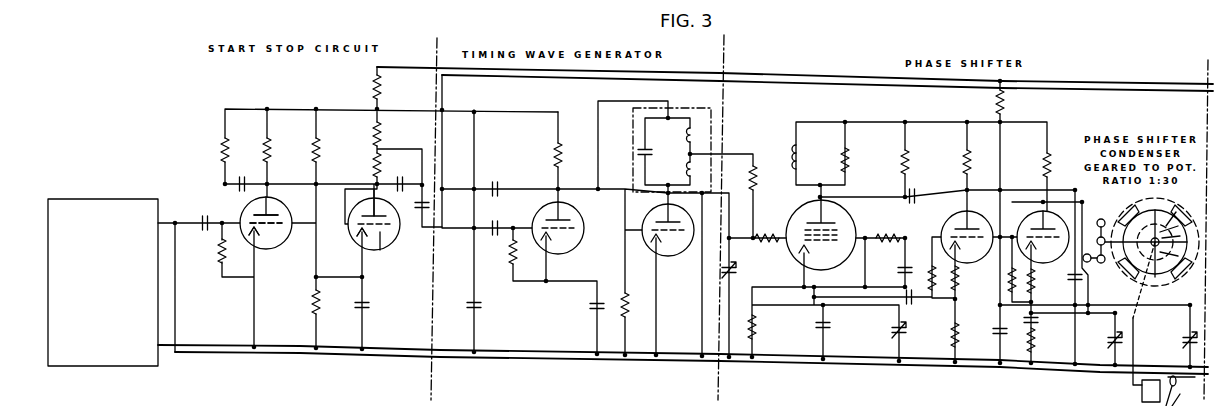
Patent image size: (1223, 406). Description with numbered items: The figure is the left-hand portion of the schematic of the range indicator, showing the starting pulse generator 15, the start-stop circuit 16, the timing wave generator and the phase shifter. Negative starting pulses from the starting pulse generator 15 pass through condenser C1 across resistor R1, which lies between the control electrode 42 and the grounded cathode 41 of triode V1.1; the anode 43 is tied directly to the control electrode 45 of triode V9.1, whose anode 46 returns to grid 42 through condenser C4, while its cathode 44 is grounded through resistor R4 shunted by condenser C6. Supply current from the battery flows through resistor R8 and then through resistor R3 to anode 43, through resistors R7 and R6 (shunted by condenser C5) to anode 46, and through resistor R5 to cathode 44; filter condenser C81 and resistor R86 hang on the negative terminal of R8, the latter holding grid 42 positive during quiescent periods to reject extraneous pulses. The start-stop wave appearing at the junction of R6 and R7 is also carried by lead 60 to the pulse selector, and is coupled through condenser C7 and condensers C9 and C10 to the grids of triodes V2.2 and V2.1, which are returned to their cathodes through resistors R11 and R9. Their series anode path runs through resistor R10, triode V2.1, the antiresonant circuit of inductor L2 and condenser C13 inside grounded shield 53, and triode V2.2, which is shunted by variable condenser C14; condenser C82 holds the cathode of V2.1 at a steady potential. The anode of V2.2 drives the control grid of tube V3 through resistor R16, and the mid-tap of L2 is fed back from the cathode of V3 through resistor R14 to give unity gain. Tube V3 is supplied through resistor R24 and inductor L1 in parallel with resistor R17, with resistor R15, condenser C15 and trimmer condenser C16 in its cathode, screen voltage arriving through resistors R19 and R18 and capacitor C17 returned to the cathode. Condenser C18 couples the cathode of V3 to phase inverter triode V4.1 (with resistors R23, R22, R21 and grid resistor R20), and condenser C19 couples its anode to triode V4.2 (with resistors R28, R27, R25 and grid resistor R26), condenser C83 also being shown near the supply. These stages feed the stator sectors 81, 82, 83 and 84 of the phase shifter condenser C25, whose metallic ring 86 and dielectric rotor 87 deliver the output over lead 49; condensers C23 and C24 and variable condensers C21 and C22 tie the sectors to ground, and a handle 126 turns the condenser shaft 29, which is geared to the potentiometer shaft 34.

The starting pulse generator 15 is at (118, 199).
The start-stop circuit 16 is at (358, 204).
The condenser C1 is at (203, 217).
The resistor R1 is at (216, 251).
The resistor R86 is at (222, 140).
The resistor R3 is at (265, 140).
The condenser C4 is at (243, 181).
The electronic triode V1.1 is at (275, 205).
The anode 43 is at (285, 214).
The control electrode 42 is at (288, 234).
The cathode 41 is at (262, 244).
The resistor R5 is at (322, 148).
The resistor R7 is at (381, 140).
The resistor R6 is at (381, 168).
The resistor R8 is at (383, 87).
The condenser C5 is at (402, 183).
The anode 46 is at (366, 206).
The electronic triode V9.1 is at (357, 244).
The cathode 44 is at (366, 248).
The control electrode 45 is at (389, 250).
The condenser C7 is at (419, 218).
The resistor R4 is at (319, 300).
The condenser C6 is at (364, 300).
The resistor R10 is at (555, 150).
The condenser C9 is at (498, 187).
The condenser C10 is at (500, 226).
The triode V2.1 is at (550, 208).
The resistor R9 is at (509, 253).
The filter condenser C81 is at (477, 307).
The condenser C82 is at (590, 307).
The resistor R11 is at (631, 306).
The triode V2.2 is at (663, 210).
The grounded shield 53 is at (709, 110).
The condenser C13 is at (646, 156).
The inductor L2 is at (684, 162).
The resistor R14 is at (754, 165).
The inductor L1 is at (820, 147).
The resistor R17 is at (842, 166).
The electronic device V3 is at (846, 213).
The resistor R16 is at (777, 224).
The variable condenser C14 is at (740, 273).
The resistor R15 is at (754, 328).
The condenser C15 is at (815, 336).
The resistor R18 is at (892, 225).
The screen grid capacitor C17 is at (899, 268).
The condenser C18 is at (904, 304).
The variable condenser C16 is at (894, 336).
The resistor R19 is at (900, 158).
The condenser C19 is at (915, 195).
The resistor R23 is at (961, 160).
The phase inverter triode V4.1 is at (956, 218).
The resistor R20 is at (934, 296).
The resistor R21 is at (950, 341).
The resistor R26 is at (998, 276).
The resistor R22 is at (1007, 286).
The resistor R24 is at (1006, 101).
The resistor R28 is at (1043, 158).
The phase inverter triode V4.2 is at (1046, 212).
The resistor R27 is at (1036, 288).
The condenser C23 is at (1037, 320).
The resistor R25 is at (1036, 342).
The capacitor C83 is at (994, 337).
The condenser C24 is at (1078, 283).
The handle 126 is at (1102, 216).
The phase shifter condenser C25 is at (1146, 286).
The stator sector 82 is at (1140, 206).
The lead 49 is at (1186, 208).
The stator sector 83 is at (1136, 281).
The stator sector 84 is at (1183, 268).
The stator sector 81 is at (1176, 212).
The dielectric rotor 87 is at (1174, 233).
The metallic ring 86 is at (1180, 258).
The variable condenser C21 is at (1124, 347).
The variable condenser C22 is at (1186, 338).
The shaft 29 is at (1132, 379).
The potentiometer shaft 34 is at (1177, 386).
The lead 60 is at (1156, 86).